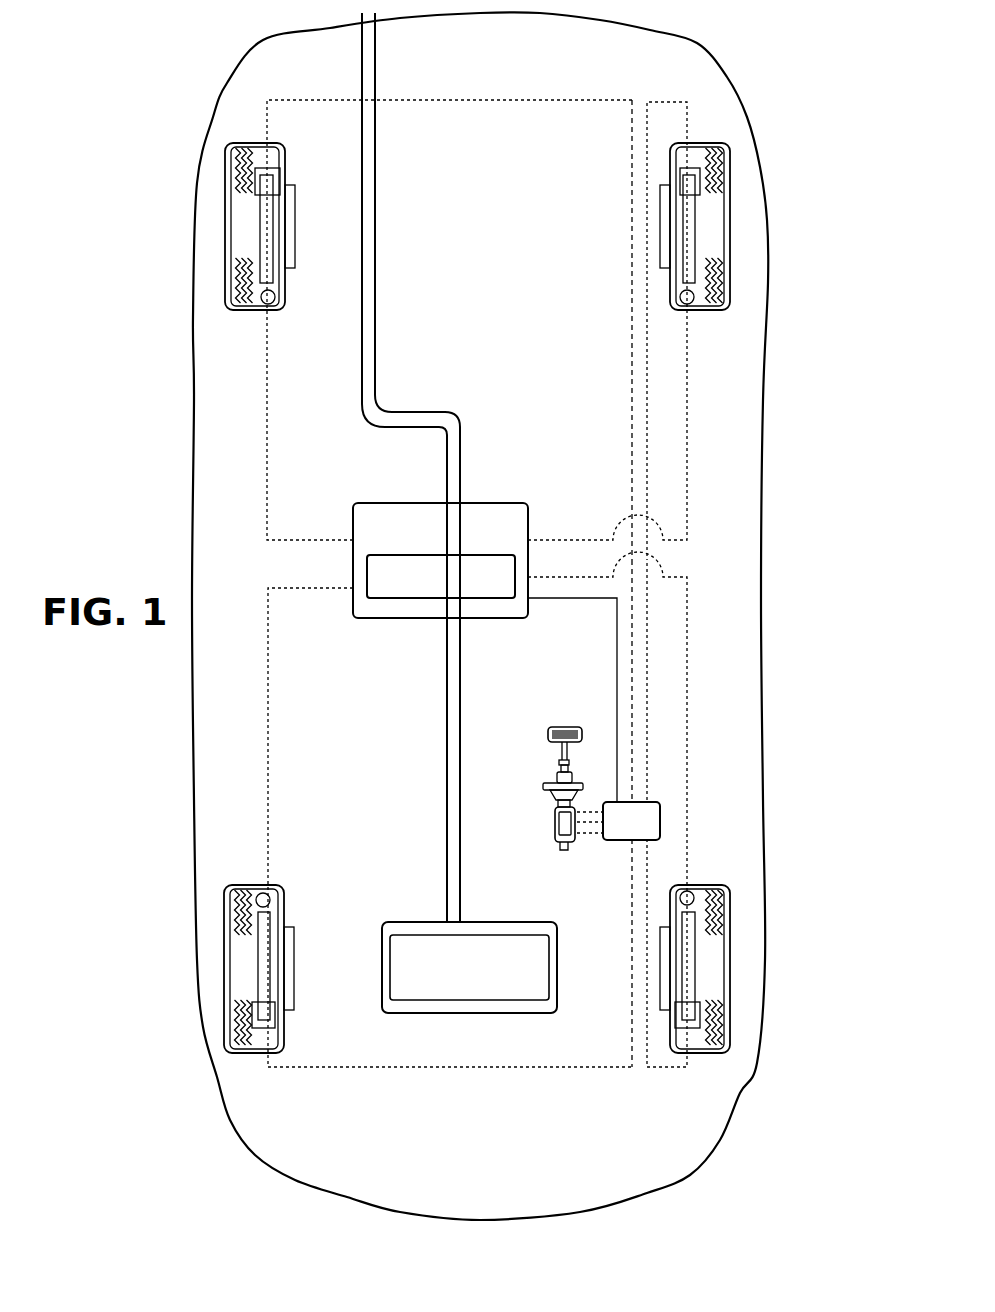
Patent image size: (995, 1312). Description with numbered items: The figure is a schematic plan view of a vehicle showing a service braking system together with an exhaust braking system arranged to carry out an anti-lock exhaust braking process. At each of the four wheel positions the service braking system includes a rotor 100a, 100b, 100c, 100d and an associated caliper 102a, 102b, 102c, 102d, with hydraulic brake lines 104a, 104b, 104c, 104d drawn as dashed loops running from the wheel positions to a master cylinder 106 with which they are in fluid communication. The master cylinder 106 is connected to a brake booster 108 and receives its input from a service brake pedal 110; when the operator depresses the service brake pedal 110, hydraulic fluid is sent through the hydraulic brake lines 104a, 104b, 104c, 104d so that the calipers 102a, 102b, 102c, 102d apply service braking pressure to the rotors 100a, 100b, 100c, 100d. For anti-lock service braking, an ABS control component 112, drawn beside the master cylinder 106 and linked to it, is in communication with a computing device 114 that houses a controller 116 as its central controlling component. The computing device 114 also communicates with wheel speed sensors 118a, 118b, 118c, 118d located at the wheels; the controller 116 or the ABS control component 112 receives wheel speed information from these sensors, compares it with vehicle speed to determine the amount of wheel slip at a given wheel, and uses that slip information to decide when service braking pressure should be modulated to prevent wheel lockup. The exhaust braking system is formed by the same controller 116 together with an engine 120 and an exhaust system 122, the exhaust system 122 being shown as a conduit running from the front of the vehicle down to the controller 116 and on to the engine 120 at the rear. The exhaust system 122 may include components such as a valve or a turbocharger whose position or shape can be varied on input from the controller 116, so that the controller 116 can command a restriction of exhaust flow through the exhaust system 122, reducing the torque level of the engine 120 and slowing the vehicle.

The rotor 100a is at (260, 227).
The rotor 100b is at (258, 957).
The rotor 100c is at (697, 967).
The rotor 100d is at (697, 230).
The caliper 102a is at (257, 177).
The caliper 102b is at (252, 1010).
The caliper 102c is at (702, 1018).
The caliper 102d is at (698, 172).
The hydraulic brake line 104a is at (283, 100).
The hydraulic brake line 104b is at (292, 1067).
The hydraulic brake line 104c is at (670, 1068).
The hydraulic brake line 104d is at (670, 101).
The master cylinder 106 is at (557, 845).
The brake booster 108 is at (543, 790).
The service brake pedal 110 is at (570, 727).
The ABS control component 112 is at (662, 822).
The computing device 114 is at (490, 503).
The controller 116 is at (503, 555).
The wheel speed sensor 118a is at (260, 297).
The wheel speed sensor 118b is at (257, 902).
The wheel speed sensor 118c is at (697, 892).
The wheel speed sensor 118d is at (695, 293).
The engine 120 is at (423, 921).
The exhaust system 122 is at (447, 725).